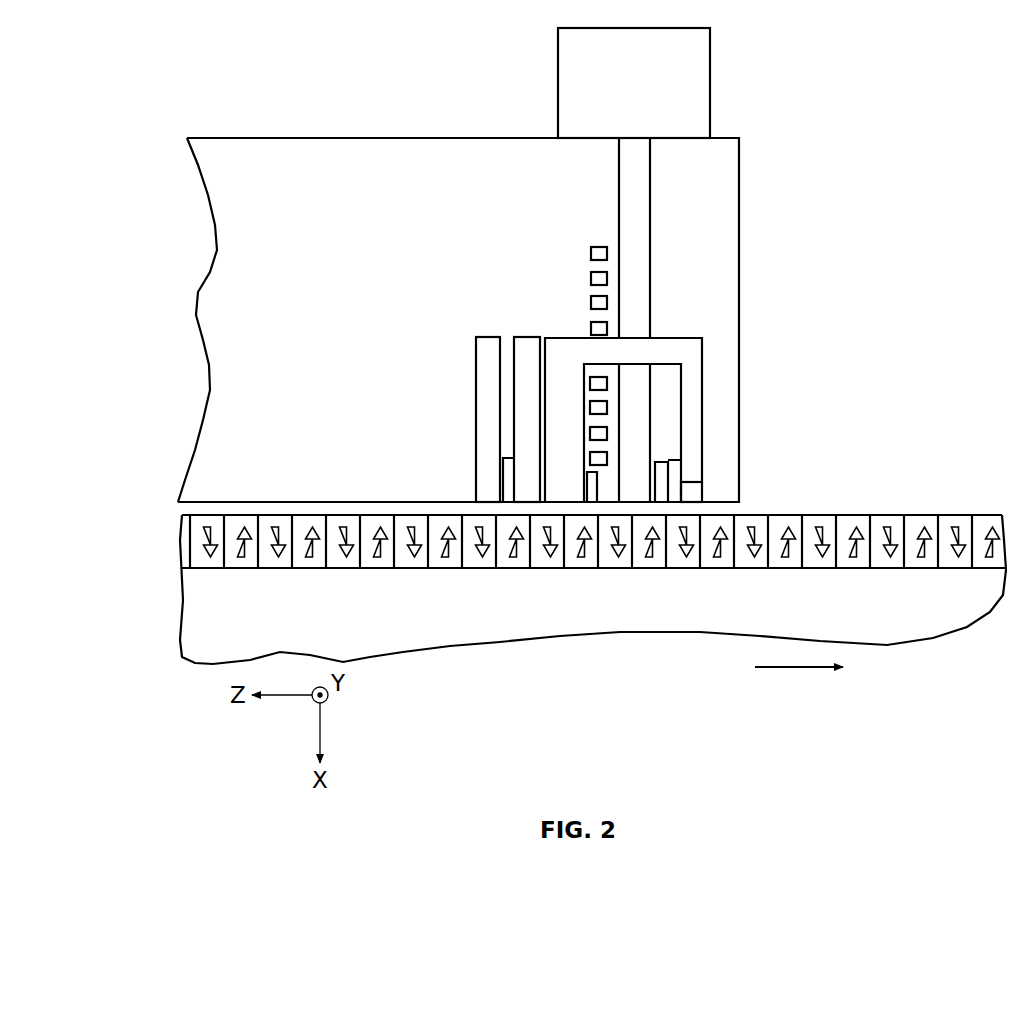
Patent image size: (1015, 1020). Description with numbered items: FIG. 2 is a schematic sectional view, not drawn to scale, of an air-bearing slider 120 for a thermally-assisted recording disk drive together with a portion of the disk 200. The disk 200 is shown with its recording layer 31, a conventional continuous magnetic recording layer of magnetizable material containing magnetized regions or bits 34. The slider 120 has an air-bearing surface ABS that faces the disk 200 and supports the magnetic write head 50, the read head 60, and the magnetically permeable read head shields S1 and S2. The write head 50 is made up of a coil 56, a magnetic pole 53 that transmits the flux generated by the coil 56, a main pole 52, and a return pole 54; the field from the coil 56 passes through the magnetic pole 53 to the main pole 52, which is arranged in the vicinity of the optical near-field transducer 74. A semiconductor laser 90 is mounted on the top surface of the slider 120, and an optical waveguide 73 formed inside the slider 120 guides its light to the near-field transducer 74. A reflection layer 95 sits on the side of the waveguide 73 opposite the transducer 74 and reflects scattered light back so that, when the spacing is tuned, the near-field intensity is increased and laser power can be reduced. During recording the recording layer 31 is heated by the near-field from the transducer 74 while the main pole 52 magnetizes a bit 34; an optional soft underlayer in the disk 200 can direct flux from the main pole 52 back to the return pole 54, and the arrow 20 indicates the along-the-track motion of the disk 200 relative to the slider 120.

The air-bearing slider 120 is at (222, 395).
The semiconductor laser 90 is at (697, 82).
The magnetic write head 50 is at (643, 373).
The optical waveguide 73 is at (632, 282).
The coil 56 is at (588, 254).
The return pole 54 is at (565, 348).
The magnetic pole 53 is at (690, 382).
The main pole 52 is at (687, 489).
The optical near-field transducer 74 is at (661, 462).
The reflection layer 95 is at (600, 487).
The read head shield S1 is at (488, 418).
The read head shield S2 is at (528, 335).
The read head 60 is at (500, 487).
The air-bearing surface ABS is at (718, 502).
The disk 200 is at (563, 581).
The recording layer 31 is at (563, 527).
The bits 34 is at (957, 525).
The direction of medium motion 20 is at (787, 672).